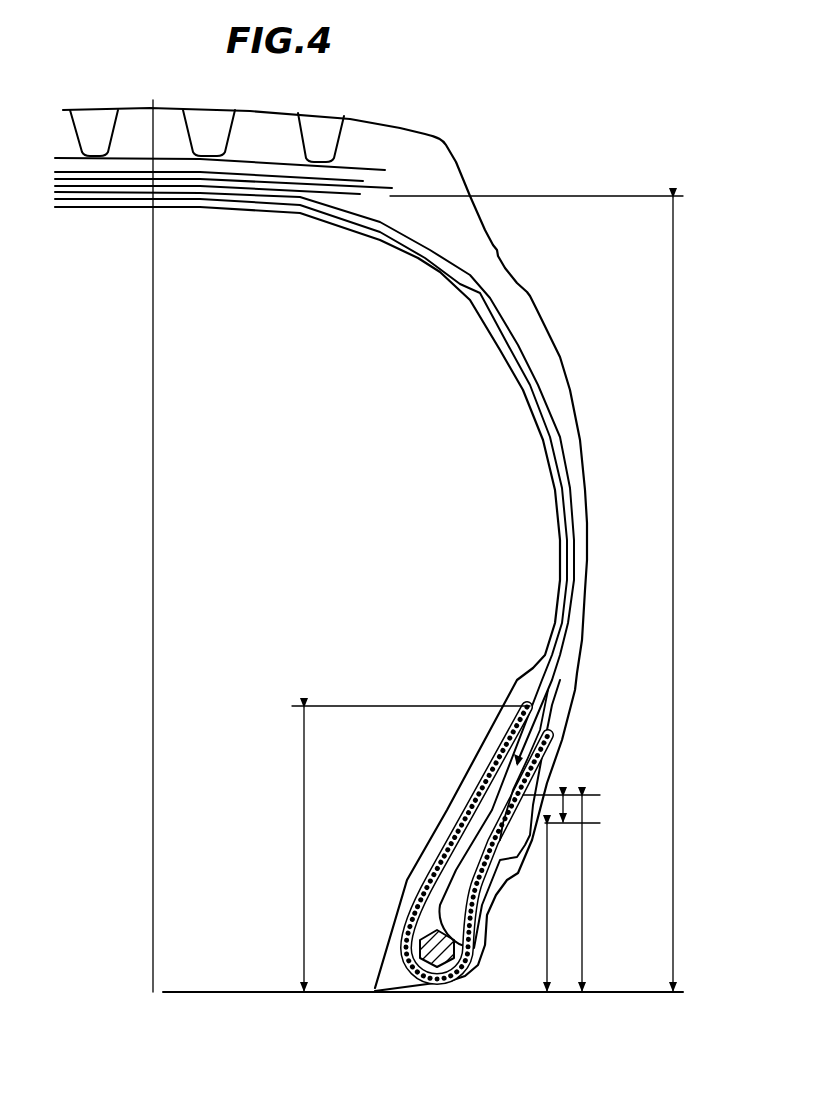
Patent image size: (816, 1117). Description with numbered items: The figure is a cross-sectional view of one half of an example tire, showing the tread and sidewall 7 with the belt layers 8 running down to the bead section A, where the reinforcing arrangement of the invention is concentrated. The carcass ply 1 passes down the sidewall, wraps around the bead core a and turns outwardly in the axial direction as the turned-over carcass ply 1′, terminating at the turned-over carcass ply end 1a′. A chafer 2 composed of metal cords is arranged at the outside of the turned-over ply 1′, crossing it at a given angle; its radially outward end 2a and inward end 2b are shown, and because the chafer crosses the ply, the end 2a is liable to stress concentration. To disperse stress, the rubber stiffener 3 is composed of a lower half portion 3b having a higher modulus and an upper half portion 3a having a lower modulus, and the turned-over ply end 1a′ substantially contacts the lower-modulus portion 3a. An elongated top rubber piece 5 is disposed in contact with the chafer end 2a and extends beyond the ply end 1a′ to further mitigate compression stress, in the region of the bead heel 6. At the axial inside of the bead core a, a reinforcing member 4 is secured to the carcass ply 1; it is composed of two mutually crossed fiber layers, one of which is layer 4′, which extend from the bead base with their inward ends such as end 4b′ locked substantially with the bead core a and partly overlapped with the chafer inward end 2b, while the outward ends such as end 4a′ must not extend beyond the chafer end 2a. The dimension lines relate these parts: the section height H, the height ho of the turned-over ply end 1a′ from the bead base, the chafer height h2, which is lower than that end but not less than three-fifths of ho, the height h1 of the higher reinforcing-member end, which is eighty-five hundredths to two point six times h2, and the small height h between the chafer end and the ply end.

The carcass ply 1 is at (430, 886).
The turned-over carcass ply 1′ is at (475, 845).
The turned-over carcass ply end 1a′ is at (523, 790).
The chafer 2 is at (489, 905).
The outward end of the chafer 2a is at (517, 857).
The inward end of the chafer 2b is at (470, 993).
The rubber stiffener 3 is at (498, 785).
The upper half portion of rubber stiffener 3a is at (537, 730).
The lower half portion of rubber stiffener 3b is at (445, 875).
The reinforcing member 4 is at (457, 806).
The fiber layer 4′ is at (478, 760).
The outward end of fiber layer 4a′ is at (480, 745).
The inward end of fiber layer 4b′ is at (420, 993).
The top rubber piece 5 is at (566, 763).
The bead heel 6 is at (509, 878).
The sidewall 7 is at (573, 663).
The belt layer 8 is at (558, 593).
The bead core a is at (424, 955).
The bead section A is at (573, 758).
The section height H is at (670, 594).
The height h is at (575, 799).
The height of reinforcing member outward end h1 is at (409, 848).
The height of chafer end h2 is at (547, 907).
The height of turned-over carcass ply end ho is at (583, 893).